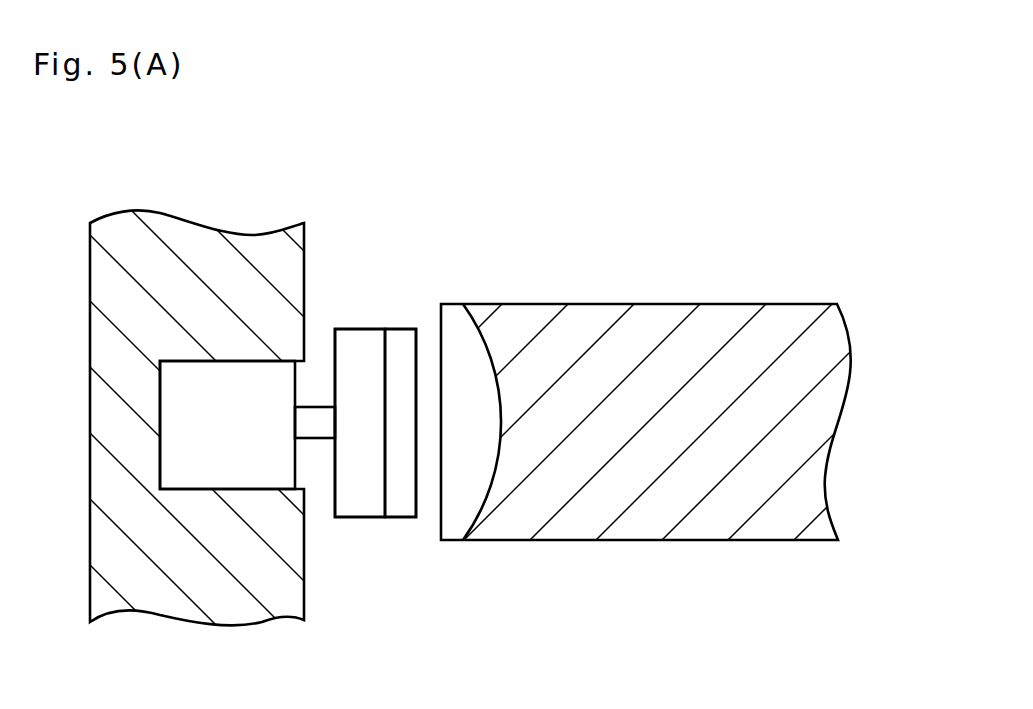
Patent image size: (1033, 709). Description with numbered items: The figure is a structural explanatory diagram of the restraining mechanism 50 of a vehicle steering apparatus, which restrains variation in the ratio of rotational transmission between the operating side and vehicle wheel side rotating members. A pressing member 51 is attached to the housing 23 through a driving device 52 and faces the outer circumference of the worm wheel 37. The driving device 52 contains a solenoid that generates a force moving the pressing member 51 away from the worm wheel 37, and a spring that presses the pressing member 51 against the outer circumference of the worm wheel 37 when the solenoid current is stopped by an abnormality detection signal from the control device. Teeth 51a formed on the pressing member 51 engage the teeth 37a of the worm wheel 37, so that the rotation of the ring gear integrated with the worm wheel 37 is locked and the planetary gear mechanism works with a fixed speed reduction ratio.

The housing 23 is at (123, 252).
The restraining mechanism 50 is at (348, 312).
The pressing member 51 is at (357, 500).
The teeth 51a is at (398, 500).
The driving device 52 is at (204, 460).
The worm wheel 37 is at (652, 515).
The teeth 37a is at (473, 372).